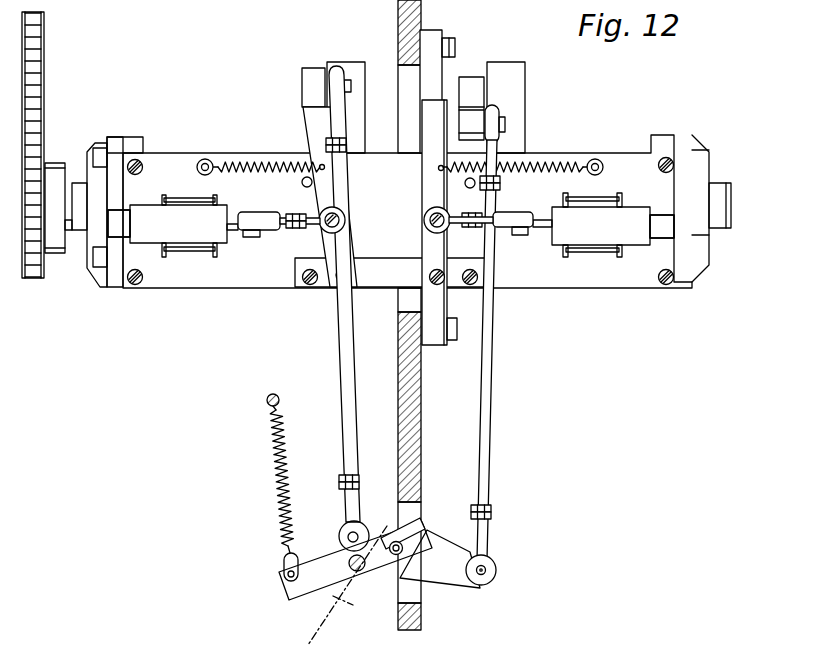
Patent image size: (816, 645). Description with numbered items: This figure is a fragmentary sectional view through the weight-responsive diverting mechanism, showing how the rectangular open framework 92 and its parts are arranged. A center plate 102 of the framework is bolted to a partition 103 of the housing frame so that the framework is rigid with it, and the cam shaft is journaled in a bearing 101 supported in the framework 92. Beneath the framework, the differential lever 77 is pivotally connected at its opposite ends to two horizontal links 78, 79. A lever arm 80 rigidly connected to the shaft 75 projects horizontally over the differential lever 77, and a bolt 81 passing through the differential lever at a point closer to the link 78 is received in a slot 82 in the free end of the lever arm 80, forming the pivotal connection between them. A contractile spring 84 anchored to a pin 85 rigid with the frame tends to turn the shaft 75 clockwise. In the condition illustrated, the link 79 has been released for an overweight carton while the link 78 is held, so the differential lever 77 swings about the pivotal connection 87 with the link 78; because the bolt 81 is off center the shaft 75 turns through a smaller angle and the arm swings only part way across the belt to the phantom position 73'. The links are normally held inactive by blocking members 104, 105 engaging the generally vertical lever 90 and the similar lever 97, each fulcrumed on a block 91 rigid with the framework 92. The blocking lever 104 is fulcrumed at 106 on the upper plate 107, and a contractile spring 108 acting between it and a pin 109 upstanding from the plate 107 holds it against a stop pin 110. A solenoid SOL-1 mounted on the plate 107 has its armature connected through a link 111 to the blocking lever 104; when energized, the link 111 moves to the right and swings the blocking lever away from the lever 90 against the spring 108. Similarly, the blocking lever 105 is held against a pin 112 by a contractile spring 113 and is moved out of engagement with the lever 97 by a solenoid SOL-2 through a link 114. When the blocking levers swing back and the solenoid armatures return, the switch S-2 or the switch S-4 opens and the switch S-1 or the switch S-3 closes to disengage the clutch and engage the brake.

The arm (phantom position) 73' is at (332, 585).
The shaft 75 is at (349, 568).
The differential lever 77 is at (455, 578).
The horizontal link 78 is at (344, 443).
The horizontal link 79 is at (490, 405).
The lever arm 80 is at (397, 570).
The bolt 81 is at (394, 541).
The slot 82 is at (425, 533).
The contractile spring 84 is at (276, 477).
The pin 85 is at (268, 404).
The pivotal connection 87 is at (346, 538).
The vertical lever 90 is at (302, 86).
The block 91 is at (350, 63).
The rectangular open framework 92 is at (236, 290).
The lever 97 is at (478, 100).
The bearing 101 is at (706, 180).
The center plate 102 is at (435, 72).
The partition 103 is at (398, 19).
The blocking member 104 is at (310, 125).
The blocking member 105 is at (427, 168).
The fulcrum 106 is at (337, 282).
The upper plate 107 is at (259, 284).
The contractile spring 108 is at (256, 162).
The pin 109 is at (198, 171).
The stop pin 110 is at (302, 184).
The link 111 is at (284, 216).
The pin 112 is at (470, 188).
The contractile spring 113 is at (551, 162).
The link 114 is at (500, 206).
The switch S-1 is at (119, 216).
The switch S-2 is at (127, 213).
The switch S-3 is at (661, 214).
The switch S-4 is at (657, 214).
The solenoid SOL-1 is at (200, 251).
The solenoid SOL-2 is at (590, 255).